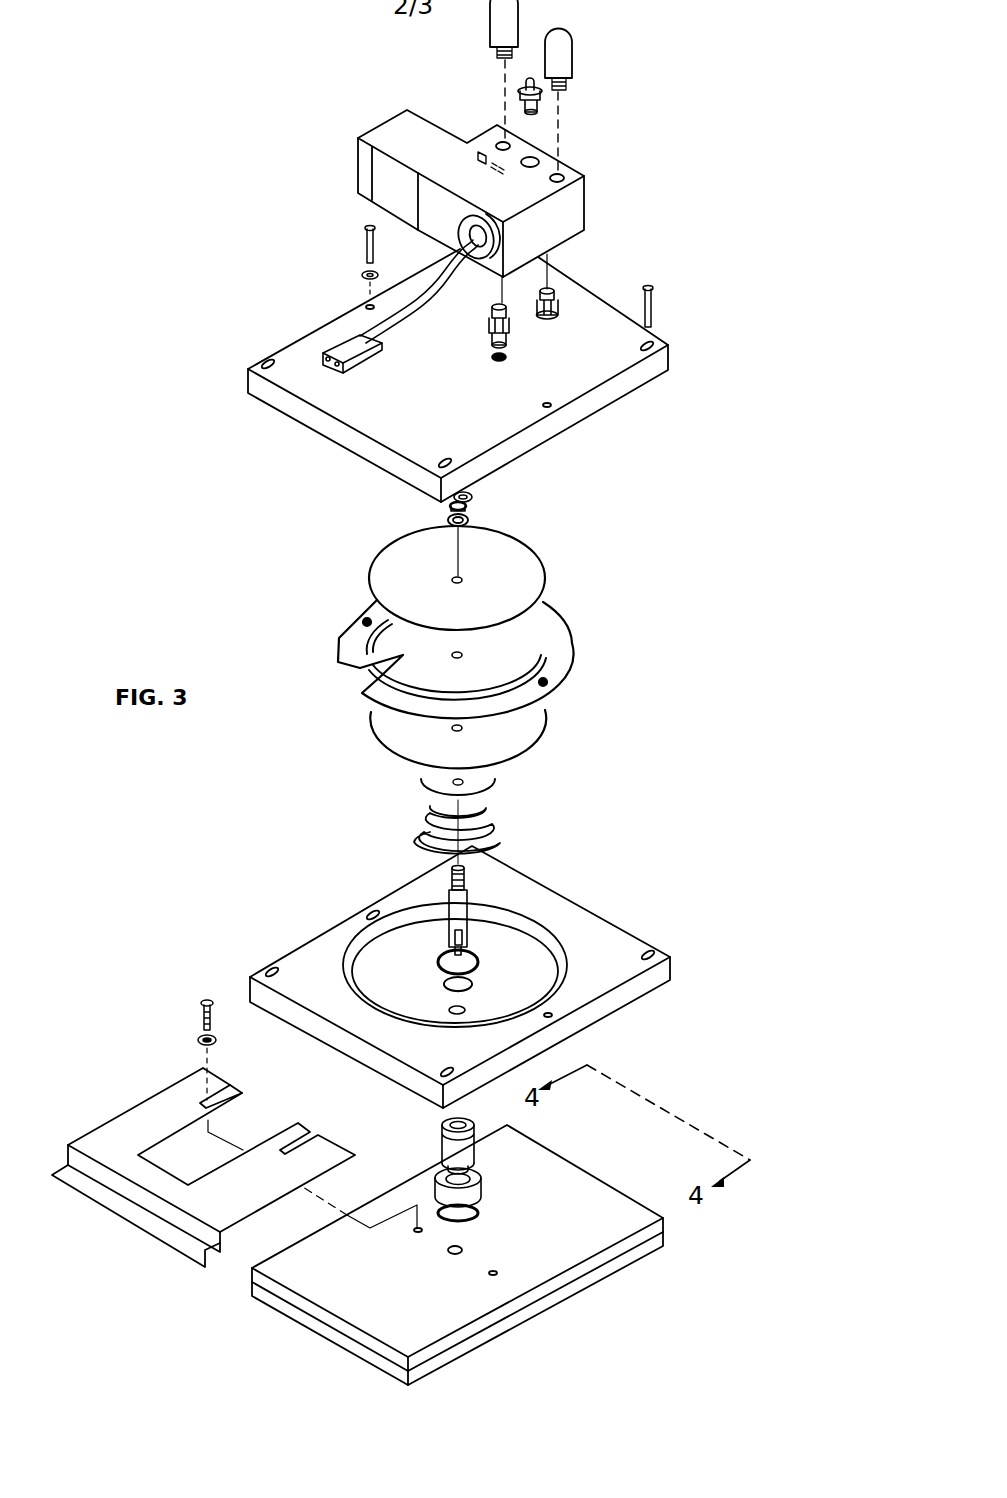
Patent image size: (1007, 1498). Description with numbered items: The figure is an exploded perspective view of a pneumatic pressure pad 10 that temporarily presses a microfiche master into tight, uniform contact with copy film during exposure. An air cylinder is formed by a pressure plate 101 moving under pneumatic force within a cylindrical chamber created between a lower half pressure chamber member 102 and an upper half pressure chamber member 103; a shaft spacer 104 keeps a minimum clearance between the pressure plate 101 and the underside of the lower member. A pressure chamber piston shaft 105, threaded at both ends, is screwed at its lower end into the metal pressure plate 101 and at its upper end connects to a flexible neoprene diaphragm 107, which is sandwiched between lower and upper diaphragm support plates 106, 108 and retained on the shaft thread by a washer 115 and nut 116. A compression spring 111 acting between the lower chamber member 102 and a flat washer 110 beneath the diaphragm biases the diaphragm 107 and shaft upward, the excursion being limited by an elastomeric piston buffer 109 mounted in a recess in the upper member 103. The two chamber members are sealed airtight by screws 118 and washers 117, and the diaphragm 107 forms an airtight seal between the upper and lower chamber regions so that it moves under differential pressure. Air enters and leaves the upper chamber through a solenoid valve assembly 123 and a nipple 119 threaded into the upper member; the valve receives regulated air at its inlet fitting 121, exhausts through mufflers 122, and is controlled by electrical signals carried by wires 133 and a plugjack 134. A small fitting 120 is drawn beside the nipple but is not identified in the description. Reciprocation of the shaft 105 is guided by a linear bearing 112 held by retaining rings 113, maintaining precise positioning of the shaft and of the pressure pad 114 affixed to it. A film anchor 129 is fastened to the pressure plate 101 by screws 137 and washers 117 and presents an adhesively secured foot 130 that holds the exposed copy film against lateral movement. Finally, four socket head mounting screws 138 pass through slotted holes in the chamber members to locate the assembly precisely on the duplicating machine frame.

The pneumatic pressure pad 10 is at (172, 176).
The pressure plate 101 is at (618, 1244).
The lower half pressure chamber member 102 is at (318, 937).
The upper half pressure chamber member 103 is at (298, 347).
The shaft spacer 104 is at (483, 1190).
The pressure chamber piston shaft 105 is at (470, 905).
The lower diaphragm support plate 106 is at (545, 722).
The flexible diaphragm 107 is at (573, 645).
The upper diaphragm support plate 108 is at (545, 578).
The elastomeric piston buffer 109 is at (472, 497).
The flat washer 110 is at (497, 790).
The compression spring 111 is at (502, 838).
The linear bearing 112 is at (478, 1152).
The retaining rings 113 is at (480, 965).
The pressure pad 114 is at (297, 1322).
The washer 115 is at (470, 521).
The nut 116 is at (468, 505).
The washers 117 is at (362, 276).
The screws 118 is at (366, 230).
The nipple 119 is at (509, 336).
The fitting 120 is at (557, 303).
The inlet fitting 121 is at (547, 98).
The mufflers 122 is at (562, 30).
The solenoid valve assembly 123 is at (413, 145).
The film anchor 129 is at (126, 1110).
The foot 130 is at (114, 1217).
The wires 133 is at (380, 325).
The plugjack 134 is at (322, 343).
The screws 137 is at (204, 1000).
The socket head mounting screws 138 is at (653, 290).